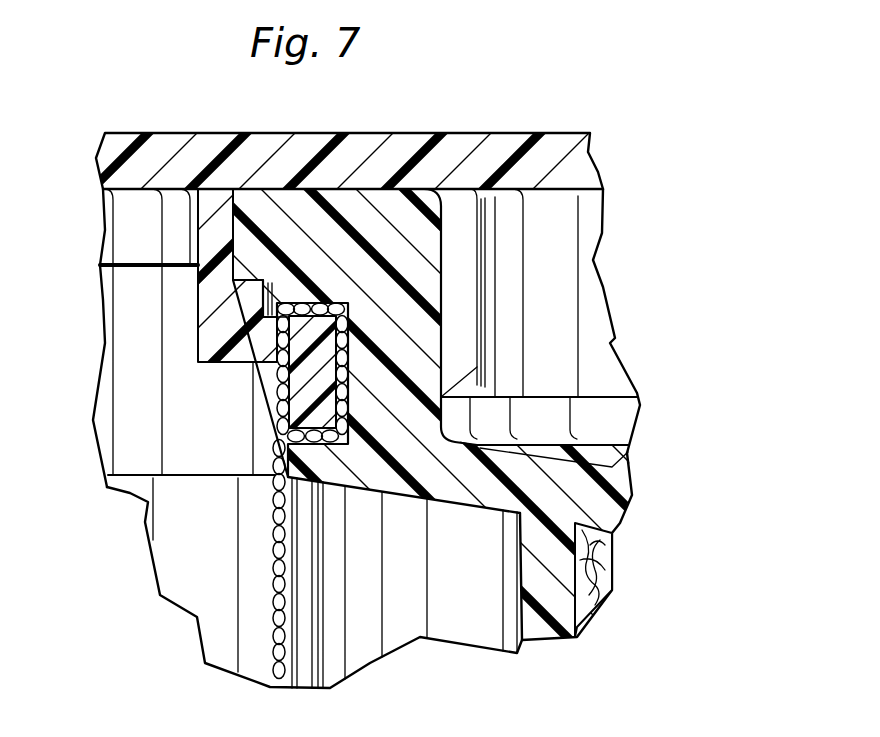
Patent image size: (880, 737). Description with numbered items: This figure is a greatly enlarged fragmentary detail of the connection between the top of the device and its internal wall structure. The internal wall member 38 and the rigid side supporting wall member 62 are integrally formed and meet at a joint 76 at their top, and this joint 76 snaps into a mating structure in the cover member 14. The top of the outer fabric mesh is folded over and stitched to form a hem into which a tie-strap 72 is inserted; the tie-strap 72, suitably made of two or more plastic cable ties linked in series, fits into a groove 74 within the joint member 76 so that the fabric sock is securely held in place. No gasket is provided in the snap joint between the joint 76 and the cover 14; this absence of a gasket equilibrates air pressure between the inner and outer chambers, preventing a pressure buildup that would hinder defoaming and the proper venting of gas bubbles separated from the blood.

The cover member 14 is at (448, 150).
The internal wall member 38 is at (600, 507).
The side supporting wall member 62 is at (578, 633).
The tie-strap 72 is at (303, 303).
The groove 74 is at (345, 303).
The joint 76 is at (423, 265).